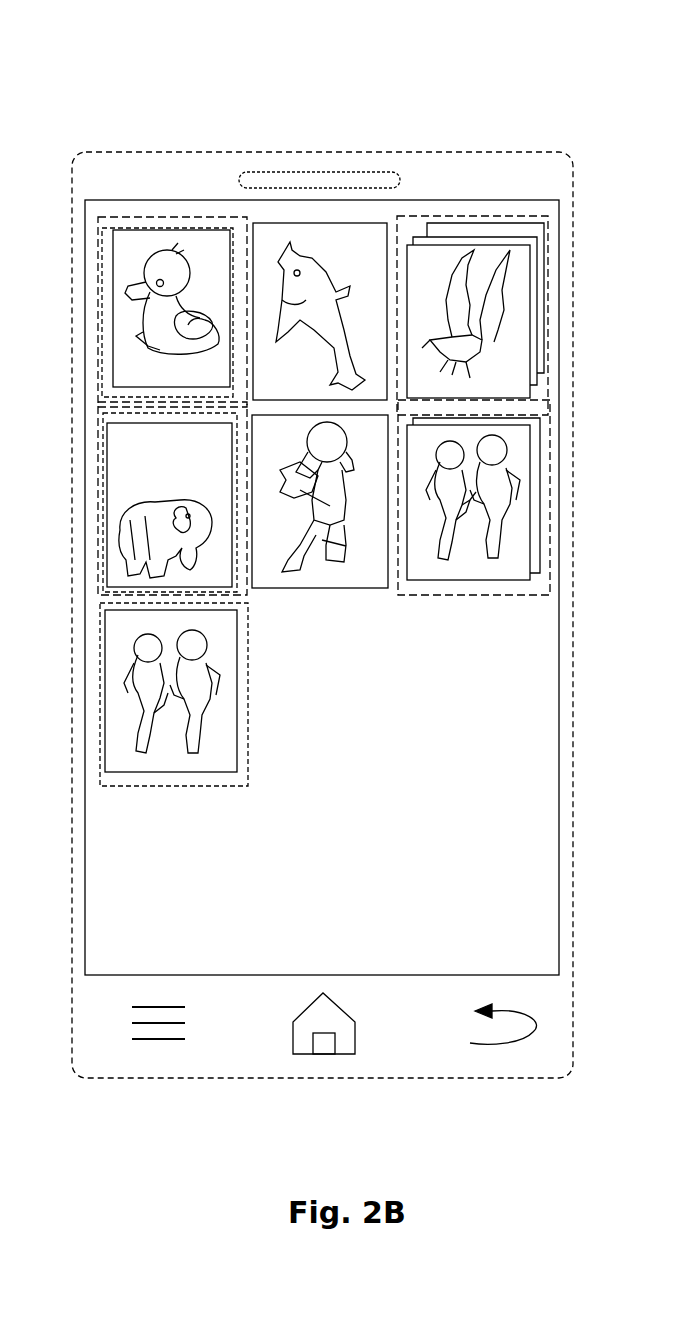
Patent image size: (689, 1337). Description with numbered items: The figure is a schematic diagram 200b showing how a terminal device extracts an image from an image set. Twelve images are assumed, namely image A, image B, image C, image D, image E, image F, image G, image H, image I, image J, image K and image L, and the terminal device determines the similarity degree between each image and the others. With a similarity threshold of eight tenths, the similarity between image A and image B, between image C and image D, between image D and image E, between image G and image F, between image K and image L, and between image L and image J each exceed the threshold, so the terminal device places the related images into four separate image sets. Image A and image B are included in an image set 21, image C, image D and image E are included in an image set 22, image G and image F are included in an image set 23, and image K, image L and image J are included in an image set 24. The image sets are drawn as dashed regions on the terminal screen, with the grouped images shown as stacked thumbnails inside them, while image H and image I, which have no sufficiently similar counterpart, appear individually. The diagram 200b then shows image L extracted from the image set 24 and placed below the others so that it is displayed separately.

The schematic diagram 200b is at (350, 33).
The image set 21 is at (152, 216).
The image set 22 is at (488, 214).
The image set 23 is at (100, 482).
The image set 24 is at (525, 410).
The image A is at (130, 257).
The image B is at (128, 228).
The image C is at (512, 232).
The image D is at (520, 240).
The image E is at (515, 282).
The image F is at (130, 418).
The image G is at (130, 452).
The image H is at (345, 238).
The image I is at (358, 437).
The image J is at (545, 420).
The image K is at (522, 463).
The image L is at (130, 628).